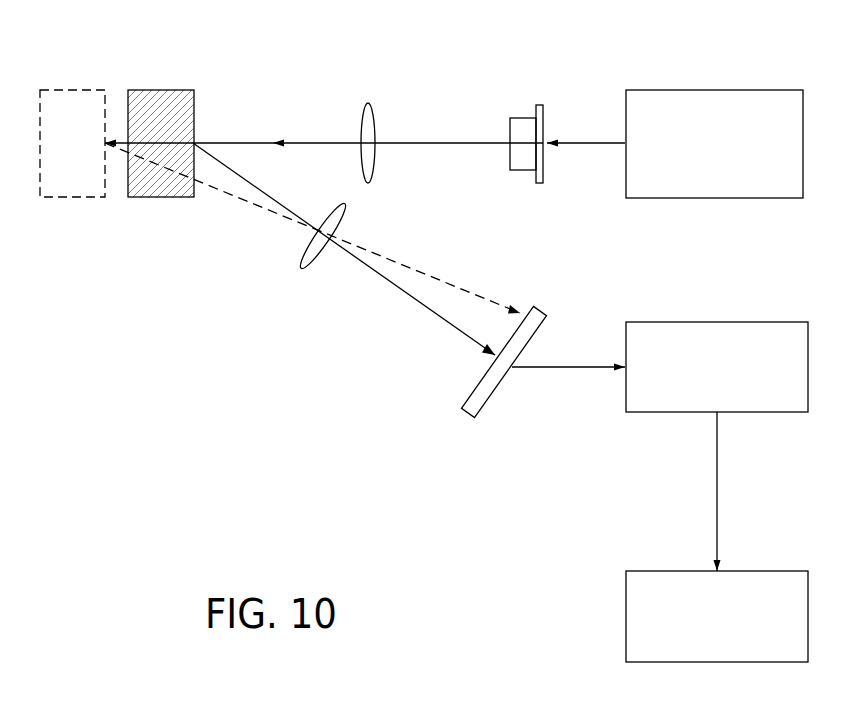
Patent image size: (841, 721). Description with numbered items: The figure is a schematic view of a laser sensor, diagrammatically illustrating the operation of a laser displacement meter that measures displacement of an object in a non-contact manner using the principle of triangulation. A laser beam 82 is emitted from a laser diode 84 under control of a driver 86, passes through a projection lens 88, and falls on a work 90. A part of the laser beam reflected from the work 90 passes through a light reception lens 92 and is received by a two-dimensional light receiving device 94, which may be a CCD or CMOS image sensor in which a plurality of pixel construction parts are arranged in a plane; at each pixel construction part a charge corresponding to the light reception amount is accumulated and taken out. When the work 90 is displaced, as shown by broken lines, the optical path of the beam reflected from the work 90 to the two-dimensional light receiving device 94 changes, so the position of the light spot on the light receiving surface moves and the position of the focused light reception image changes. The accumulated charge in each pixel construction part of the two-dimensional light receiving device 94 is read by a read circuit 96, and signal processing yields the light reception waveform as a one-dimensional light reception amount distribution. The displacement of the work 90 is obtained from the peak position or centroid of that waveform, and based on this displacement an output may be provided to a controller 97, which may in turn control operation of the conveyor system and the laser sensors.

The laser beam 82 is at (583, 141).
The laser diode 84 is at (536, 110).
The driver 86 is at (769, 90).
The projection lens 88 is at (370, 103).
The work 90 is at (63, 88).
The light reception lens 92 is at (336, 210).
The two-dimensional light receiving device 94 is at (545, 309).
The read circuit 96 is at (769, 322).
The controller 97 is at (769, 571).